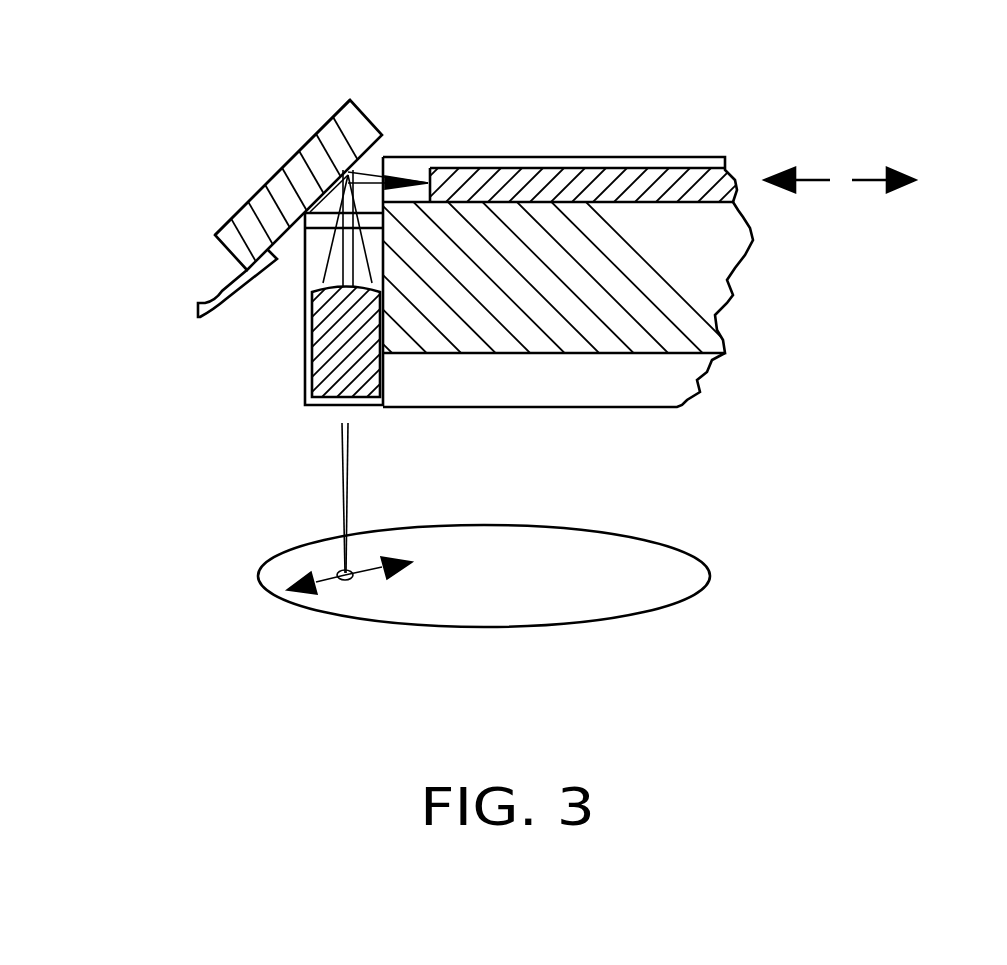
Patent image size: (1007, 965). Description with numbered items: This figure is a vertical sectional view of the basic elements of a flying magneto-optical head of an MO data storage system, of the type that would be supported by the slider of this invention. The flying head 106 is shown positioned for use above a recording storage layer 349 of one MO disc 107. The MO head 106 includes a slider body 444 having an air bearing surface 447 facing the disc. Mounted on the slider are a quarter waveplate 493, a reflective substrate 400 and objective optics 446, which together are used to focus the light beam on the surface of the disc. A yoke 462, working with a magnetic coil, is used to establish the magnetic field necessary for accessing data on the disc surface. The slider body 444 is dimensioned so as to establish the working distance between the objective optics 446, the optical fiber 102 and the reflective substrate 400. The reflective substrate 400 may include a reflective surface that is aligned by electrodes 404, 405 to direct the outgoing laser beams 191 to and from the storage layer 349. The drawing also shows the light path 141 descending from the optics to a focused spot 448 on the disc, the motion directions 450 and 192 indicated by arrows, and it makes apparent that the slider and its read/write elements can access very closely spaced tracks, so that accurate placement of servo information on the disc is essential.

The flying head 106 is at (537, 35).
The optical fiber 102 is at (590, 156).
The slider body 444 is at (717, 315).
The air bearing surface 447 is at (567, 408).
The yoke 462 is at (307, 398).
The objective optics 446 is at (327, 342).
The reflective substrate 400 is at (253, 188).
The quarter waveplate 493 is at (298, 157).
The electrode 404 is at (153, 308).
The electrode 405 is at (198, 310).
The light beam 141 is at (350, 480).
The MO disc 107 is at (257, 573).
The recording storage layer 349 is at (575, 607).
The focused spot 448 is at (352, 578).
The spot movement direction 450 is at (332, 580).
The outgoing laser beams 191 is at (812, 182).
The movement direction arrow 192 is at (878, 182).